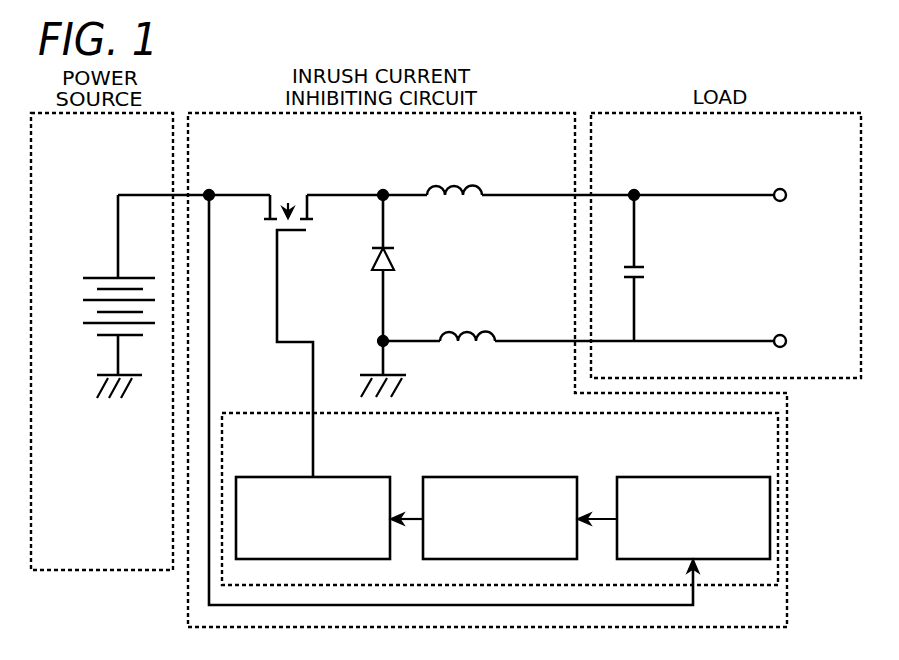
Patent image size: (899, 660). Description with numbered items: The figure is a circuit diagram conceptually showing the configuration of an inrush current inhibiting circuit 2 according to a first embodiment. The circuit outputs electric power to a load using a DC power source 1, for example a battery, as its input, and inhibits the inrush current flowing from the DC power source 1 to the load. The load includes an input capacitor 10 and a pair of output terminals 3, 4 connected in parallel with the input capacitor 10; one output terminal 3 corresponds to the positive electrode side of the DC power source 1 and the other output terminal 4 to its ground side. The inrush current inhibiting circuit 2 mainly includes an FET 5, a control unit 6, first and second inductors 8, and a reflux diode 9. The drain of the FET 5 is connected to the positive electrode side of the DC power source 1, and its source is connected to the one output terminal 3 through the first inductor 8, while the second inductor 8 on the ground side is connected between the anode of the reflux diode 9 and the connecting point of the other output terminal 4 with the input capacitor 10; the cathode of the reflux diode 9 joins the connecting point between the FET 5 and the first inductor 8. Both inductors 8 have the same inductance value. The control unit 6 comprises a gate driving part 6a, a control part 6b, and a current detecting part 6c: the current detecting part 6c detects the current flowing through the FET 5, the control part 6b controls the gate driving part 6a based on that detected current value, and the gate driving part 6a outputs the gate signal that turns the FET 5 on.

The DC power source 1 is at (100, 277).
The inrush current inhibiting circuit 2 is at (527, 113).
The output terminal 3 is at (785, 189).
The output terminal 4 is at (785, 335).
The FET 5 is at (289, 203).
The control unit 6 is at (277, 412).
The gate driving part 6a is at (383, 477).
The control part 6b is at (508, 477).
The current detecting part 6c is at (710, 477).
The first and second inductors 8 is at (476, 178).
The reflux diode 9 is at (395, 262).
The input capacitor 10 is at (641, 266).